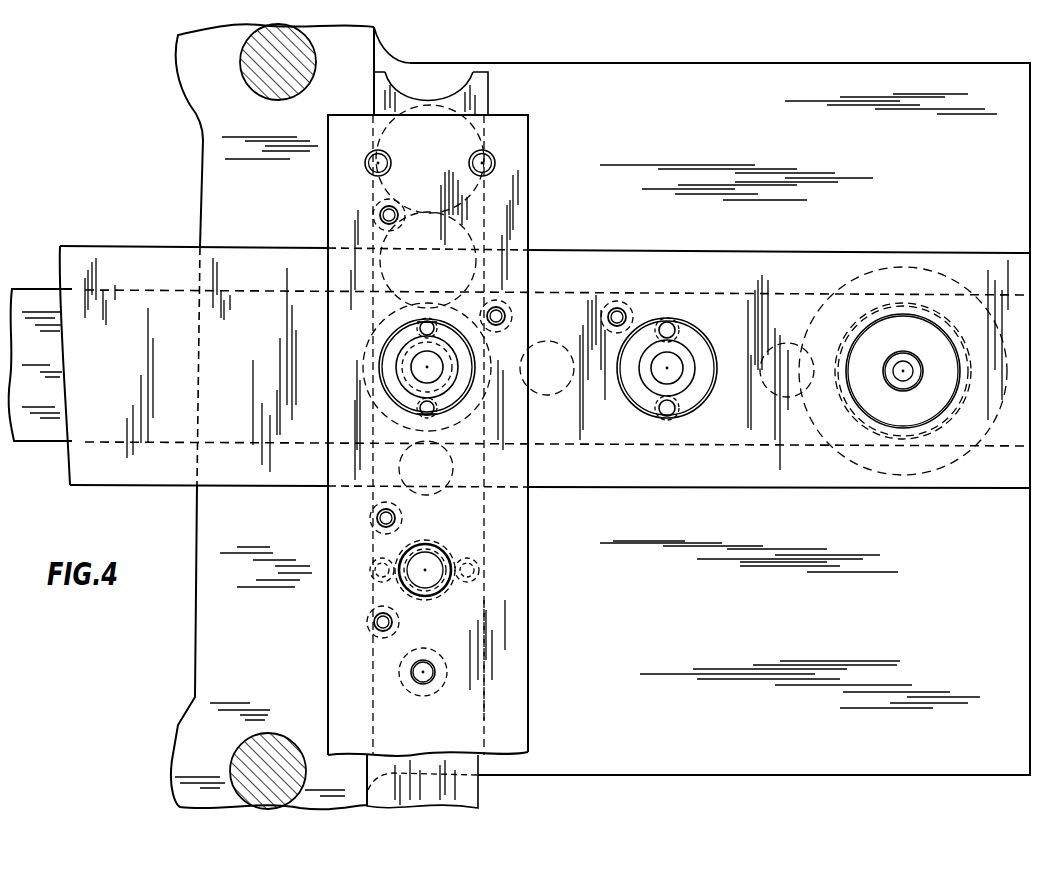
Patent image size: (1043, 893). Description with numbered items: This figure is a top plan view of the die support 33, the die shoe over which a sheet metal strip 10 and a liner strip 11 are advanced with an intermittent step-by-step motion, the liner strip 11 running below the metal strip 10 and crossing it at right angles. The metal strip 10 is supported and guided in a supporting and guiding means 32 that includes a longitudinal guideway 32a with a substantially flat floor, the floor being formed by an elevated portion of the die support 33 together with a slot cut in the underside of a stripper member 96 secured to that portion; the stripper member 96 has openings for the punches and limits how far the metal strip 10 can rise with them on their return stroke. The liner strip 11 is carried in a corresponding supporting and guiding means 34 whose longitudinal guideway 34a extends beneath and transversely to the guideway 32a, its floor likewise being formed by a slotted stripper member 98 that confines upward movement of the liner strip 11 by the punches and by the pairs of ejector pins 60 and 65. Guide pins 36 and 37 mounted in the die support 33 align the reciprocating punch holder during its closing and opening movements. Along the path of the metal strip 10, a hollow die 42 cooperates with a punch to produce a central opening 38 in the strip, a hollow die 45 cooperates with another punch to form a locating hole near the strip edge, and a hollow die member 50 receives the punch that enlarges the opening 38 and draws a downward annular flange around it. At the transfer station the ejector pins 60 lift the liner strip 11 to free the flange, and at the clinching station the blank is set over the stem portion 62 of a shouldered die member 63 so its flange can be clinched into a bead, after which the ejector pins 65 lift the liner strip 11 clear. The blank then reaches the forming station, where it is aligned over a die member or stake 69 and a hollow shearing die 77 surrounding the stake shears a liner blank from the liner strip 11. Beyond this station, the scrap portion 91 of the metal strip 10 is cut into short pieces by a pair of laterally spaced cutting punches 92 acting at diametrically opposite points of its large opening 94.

The sheet metal strip 10 is at (484, 789).
The liner strip 11 is at (28, 448).
The supporting and guiding means 32 is at (526, 626).
The longitudinal guideway 32a is at (473, 665).
The die support 33 is at (675, 765).
The supporting and guiding means 34 is at (735, 480).
The longitudinal guideway 34a is at (632, 437).
The guide pin 36 is at (278, 748).
The guide pin 37 is at (295, 90).
The opening 38 is at (428, 680).
The hollow die 42 is at (409, 686).
The hollow die 45 is at (395, 628).
The hollow die member 50 is at (437, 556).
The ejector pins 60 is at (438, 322).
The stem portion 62 is at (676, 367).
The shouldered die member 63 is at (683, 384).
The ejector pins 65 is at (675, 323).
The die member 69 is at (913, 382).
The hollow shearing die 77 is at (958, 330).
The scrap portion 91 is at (484, 105).
The cutting punches 92 is at (478, 158).
The opening 94 is at (466, 84).
The stripper member 96 is at (512, 562).
The stripper member 98 is at (800, 478).